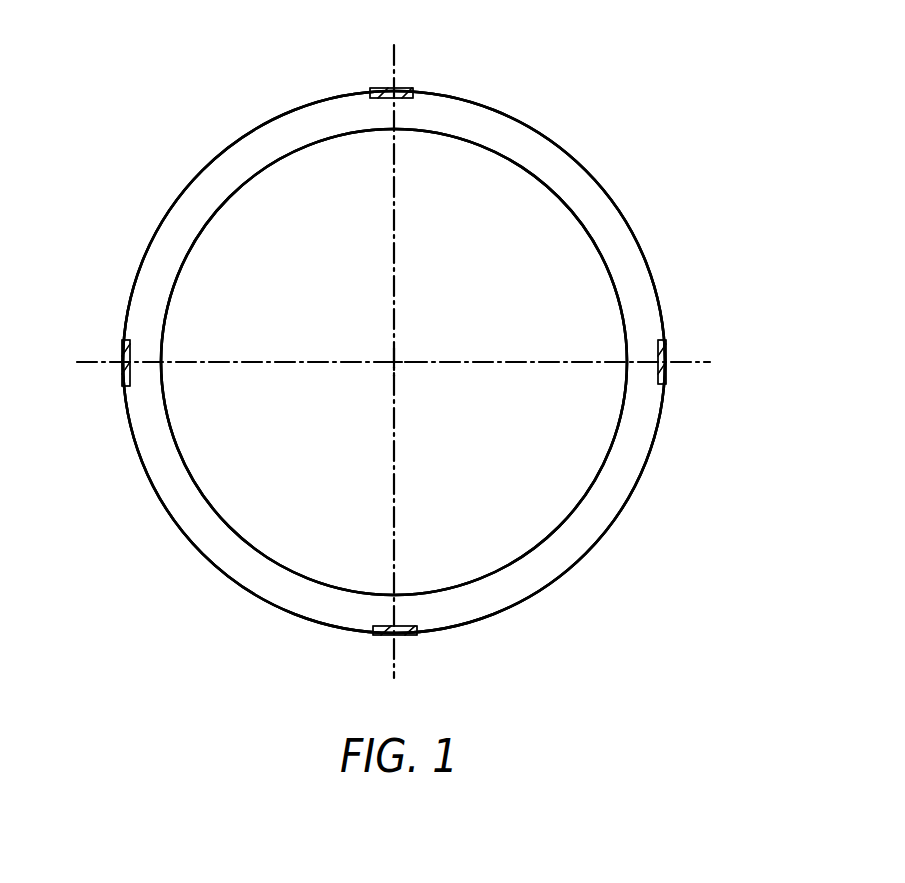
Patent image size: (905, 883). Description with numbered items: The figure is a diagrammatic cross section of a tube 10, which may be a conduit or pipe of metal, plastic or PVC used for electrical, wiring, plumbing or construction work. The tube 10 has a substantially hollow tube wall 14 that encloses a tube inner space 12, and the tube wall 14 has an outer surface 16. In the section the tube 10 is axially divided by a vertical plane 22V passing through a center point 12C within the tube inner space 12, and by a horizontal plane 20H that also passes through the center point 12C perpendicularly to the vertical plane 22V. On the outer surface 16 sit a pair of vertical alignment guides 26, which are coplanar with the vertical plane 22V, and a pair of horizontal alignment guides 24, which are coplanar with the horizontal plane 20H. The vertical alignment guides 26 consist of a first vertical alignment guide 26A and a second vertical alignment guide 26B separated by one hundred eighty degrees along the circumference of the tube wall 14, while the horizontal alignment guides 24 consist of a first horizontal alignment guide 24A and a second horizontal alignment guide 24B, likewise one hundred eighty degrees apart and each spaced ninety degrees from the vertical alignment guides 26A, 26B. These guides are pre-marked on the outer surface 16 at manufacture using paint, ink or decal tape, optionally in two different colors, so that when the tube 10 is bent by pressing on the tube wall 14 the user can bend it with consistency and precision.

The tube 10 is at (687, 154).
The tube inner space 12 is at (527, 198).
The center point 12C is at (393, 360).
The tube wall 14 is at (613, 230).
The outer surface 16 is at (660, 292).
The horizontal plane 20H is at (470, 363).
The vertical plane 22V is at (395, 518).
The horizontal alignment guides 24 is at (92, 332).
The first horizontal alignment guide 24A is at (122, 380).
The second horizontal alignment guide 24B is at (667, 377).
The vertical alignment guides 26 is at (359, 46).
The first vertical alignment guide 26A is at (403, 88).
The second vertical alignment guide 26B is at (405, 636).